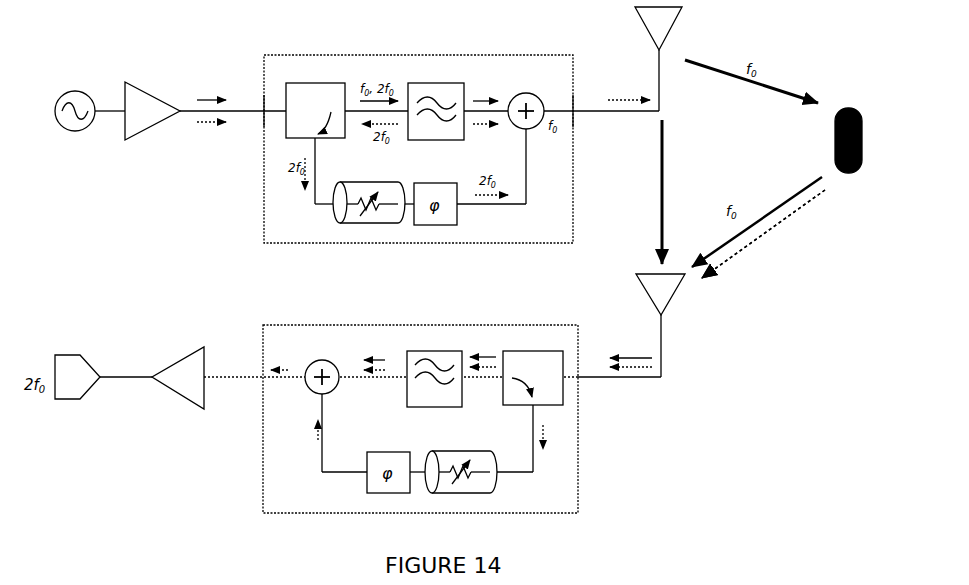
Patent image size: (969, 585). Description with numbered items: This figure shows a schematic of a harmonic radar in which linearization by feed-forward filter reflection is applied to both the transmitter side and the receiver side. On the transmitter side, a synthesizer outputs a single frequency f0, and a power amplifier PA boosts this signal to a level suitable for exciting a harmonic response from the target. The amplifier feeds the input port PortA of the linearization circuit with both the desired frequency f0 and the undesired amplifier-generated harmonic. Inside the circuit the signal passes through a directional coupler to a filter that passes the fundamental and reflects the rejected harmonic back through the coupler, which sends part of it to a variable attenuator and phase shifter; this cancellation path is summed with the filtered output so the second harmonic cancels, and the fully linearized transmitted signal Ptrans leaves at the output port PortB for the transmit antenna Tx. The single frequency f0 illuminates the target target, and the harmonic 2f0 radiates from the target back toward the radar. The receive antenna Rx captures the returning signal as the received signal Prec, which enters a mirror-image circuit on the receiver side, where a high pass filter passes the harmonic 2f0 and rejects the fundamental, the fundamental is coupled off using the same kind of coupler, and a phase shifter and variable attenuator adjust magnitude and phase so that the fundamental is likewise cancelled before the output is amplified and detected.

The single frequency f0 is at (60, 111).
The power amplifier PA is at (152, 111).
The Port A PortA is at (253, 97).
The Port B PortB is at (583, 99).
The transmitted signal Ptrans is at (627, 88).
The transmit antenna Tx is at (658, 59).
The element target is at (849, 140).
The harmonic 2f0 is at (763, 235).
The receive antenna Rx is at (660, 325).
The received signal Prec is at (631, 352).